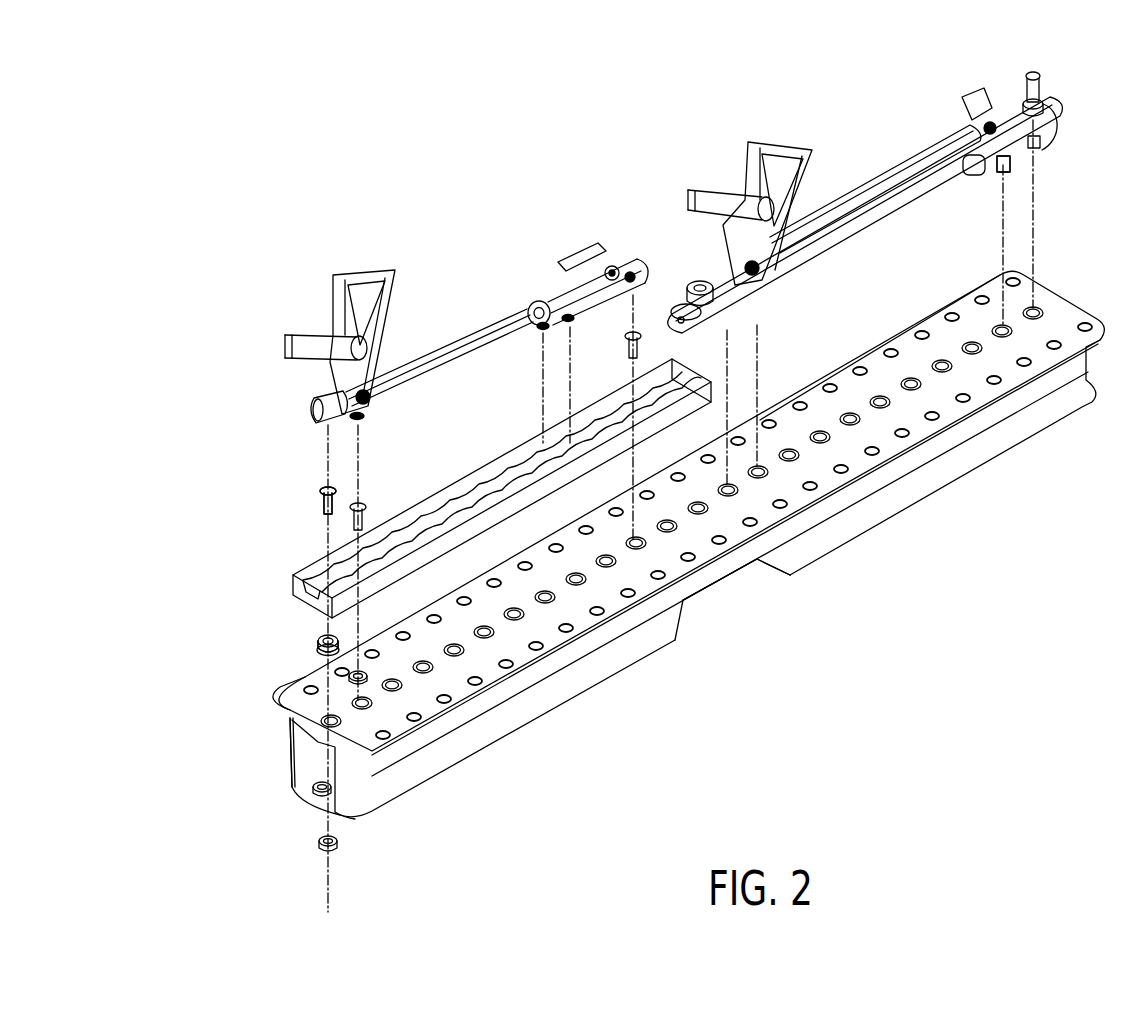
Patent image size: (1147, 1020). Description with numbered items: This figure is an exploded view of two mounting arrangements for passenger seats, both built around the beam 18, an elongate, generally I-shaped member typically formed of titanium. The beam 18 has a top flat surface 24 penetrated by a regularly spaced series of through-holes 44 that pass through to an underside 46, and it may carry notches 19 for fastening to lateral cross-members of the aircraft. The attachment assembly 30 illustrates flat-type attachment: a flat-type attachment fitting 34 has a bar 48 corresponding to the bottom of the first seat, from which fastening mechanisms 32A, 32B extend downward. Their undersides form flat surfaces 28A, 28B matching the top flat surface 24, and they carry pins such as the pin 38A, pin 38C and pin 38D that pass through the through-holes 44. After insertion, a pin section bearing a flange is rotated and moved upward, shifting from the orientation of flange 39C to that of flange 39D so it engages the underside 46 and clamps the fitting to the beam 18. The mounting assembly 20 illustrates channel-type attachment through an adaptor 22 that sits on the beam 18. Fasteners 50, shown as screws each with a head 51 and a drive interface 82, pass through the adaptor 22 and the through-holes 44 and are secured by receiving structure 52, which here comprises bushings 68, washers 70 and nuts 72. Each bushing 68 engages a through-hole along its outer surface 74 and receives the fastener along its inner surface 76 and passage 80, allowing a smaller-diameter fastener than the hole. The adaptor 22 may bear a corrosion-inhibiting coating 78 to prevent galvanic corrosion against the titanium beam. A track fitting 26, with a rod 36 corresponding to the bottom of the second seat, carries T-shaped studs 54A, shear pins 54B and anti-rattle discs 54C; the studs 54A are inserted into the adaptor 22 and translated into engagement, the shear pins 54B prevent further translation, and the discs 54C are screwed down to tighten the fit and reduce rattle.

The beam 18 is at (653, 660).
The notches 19 is at (724, 600).
The mounting assembly 20 is at (186, 459).
The adaptor 22 is at (502, 488).
The top flat surface 24 is at (763, 512).
The track fitting 26 is at (437, 344).
The flat surface 28A is at (757, 326).
The flat surface 28B is at (983, 172).
The attachment assembly 30 is at (870, 74).
The fastening mechanism 32A is at (770, 298).
The fastening mechanism 32B is at (1049, 98).
The flat-type attachment fitting 34 is at (838, 224).
The rod 36 is at (495, 316).
The pin 38A is at (678, 316).
The pin 38C is at (1010, 160).
The pin 38D is at (1042, 146).
The flange 39C is at (1008, 175).
The flange 39D is at (1052, 126).
The through-holes 44 is at (1012, 336).
The underside 46 is at (325, 733).
The bar 48 is at (933, 148).
The fasteners 50 is at (320, 492).
The head 51 is at (323, 487).
The receiving structure 52 is at (258, 861).
The stud 54A is at (543, 330).
The shear pins 54B is at (652, 270).
The anti-rattle discs 54C is at (313, 415).
The bushings 68 is at (482, 630).
The washers 70 is at (316, 793).
The nuts 72 is at (338, 847).
The outer surface 74 is at (320, 649).
The inner surface 76 is at (326, 636).
The coating 78 is at (507, 503).
The passages 80 is at (273, 700).
The interface 82 is at (322, 498).